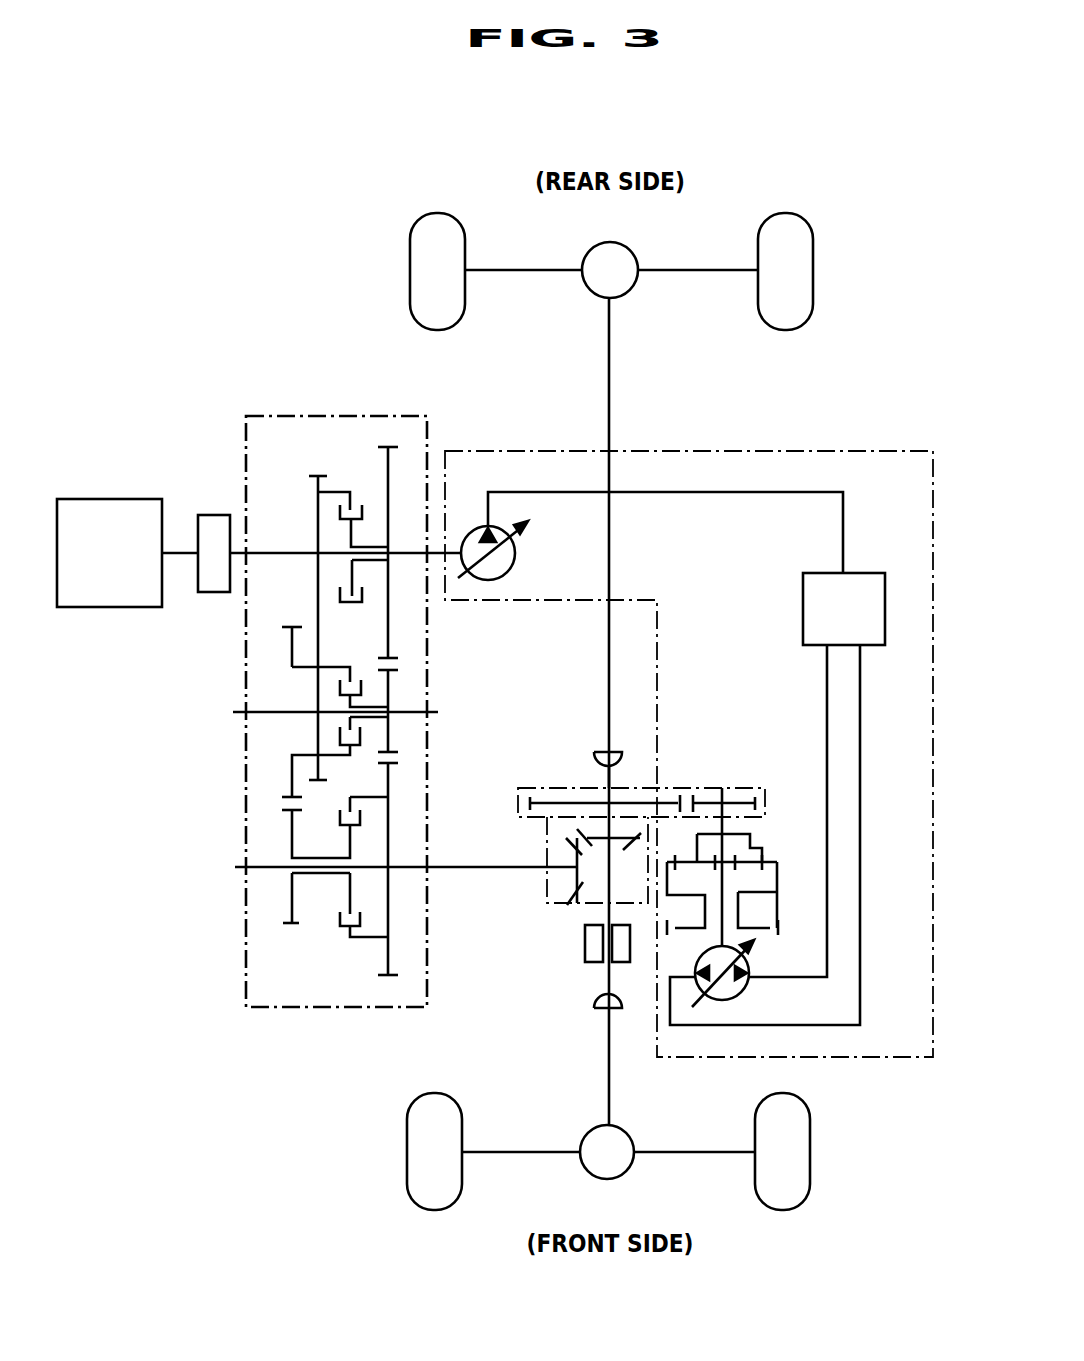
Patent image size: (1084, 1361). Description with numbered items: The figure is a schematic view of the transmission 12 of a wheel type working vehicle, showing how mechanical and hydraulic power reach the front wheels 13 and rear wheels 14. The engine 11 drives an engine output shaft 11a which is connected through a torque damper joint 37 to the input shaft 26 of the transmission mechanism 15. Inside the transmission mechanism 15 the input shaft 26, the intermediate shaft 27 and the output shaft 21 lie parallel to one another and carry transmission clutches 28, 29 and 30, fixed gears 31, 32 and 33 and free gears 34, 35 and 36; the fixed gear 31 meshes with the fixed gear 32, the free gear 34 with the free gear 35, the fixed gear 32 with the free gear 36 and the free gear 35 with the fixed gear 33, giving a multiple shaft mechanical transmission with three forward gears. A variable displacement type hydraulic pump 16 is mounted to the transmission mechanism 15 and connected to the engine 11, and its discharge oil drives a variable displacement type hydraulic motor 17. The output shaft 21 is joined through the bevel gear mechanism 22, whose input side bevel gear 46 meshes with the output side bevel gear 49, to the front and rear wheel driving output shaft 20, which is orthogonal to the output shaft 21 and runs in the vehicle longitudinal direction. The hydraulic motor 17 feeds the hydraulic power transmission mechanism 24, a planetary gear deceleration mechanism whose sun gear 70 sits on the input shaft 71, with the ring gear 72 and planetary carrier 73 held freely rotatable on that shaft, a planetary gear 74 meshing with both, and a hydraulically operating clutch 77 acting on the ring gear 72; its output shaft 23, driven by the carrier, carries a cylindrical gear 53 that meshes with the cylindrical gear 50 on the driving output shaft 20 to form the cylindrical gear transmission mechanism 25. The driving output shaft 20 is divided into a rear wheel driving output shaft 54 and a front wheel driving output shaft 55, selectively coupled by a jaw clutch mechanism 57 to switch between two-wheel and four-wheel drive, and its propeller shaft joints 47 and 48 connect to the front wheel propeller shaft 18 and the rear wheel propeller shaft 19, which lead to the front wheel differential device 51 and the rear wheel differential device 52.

The engine 11 is at (95, 499).
The engine output shaft 11a is at (181, 552).
The transmission 12 is at (367, 720).
The front wheels 13 is at (432, 1210).
The rear wheels 14 is at (440, 213).
The transmission mechanism 15 is at (280, 1010).
The variable displacement type hydraulic pump 16 is at (480, 527).
The variable displacement type hydraulic motor 17 is at (745, 990).
The front wheel propeller shaft 18 is at (607, 1097).
The rear wheel propeller shaft 19 is at (609, 365).
The front and rear wheel driving output shaft 20 is at (600, 776).
The output shaft 21 is at (260, 868).
The bevel gear mechanism 22 is at (545, 892).
The output shaft 23 is at (728, 790).
The hydraulic power transmission mechanism 24 is at (791, 850).
The cylindrical gear transmission mechanism 25 is at (517, 800).
The input shaft 26 is at (282, 552).
The intermediate shaft 27 is at (250, 713).
The transmission clutch 28 is at (362, 505).
The transmission clutch 29 is at (344, 690).
The transmission clutch 30 is at (340, 915).
The fixed gear 31 is at (316, 472).
The fixed gear 32 is at (291, 650).
The fixed gear 33 is at (393, 980).
The free gear 34 is at (390, 446).
The free gear 35 is at (392, 665).
The free gear 36 is at (285, 924).
The torque damper joint 37 is at (215, 515).
The bevel gear 46 is at (587, 943).
The propeller shaft joint 47 is at (595, 1006).
The propeller shaft joint 48 is at (596, 768).
The bevel gear 49 is at (575, 832).
The cylindrical gear 50 is at (680, 797).
The front wheel differential device 51 is at (632, 1170).
The rear wheel differential device 52 is at (634, 252).
The cylindrical gear 53 is at (694, 800).
The rear wheel driving output shaft 54 is at (612, 784).
The front wheel driving output shaft 55 is at (607, 978).
The jaw clutch mechanism 57 is at (632, 966).
The sun gear 70 is at (760, 928).
The input shaft 71 is at (693, 958).
The ring gear 72 is at (766, 856).
The planetary carrier 73 is at (755, 850).
The planetary gear 74 is at (775, 872).
The hydraulically operating clutch 77 is at (808, 1001).